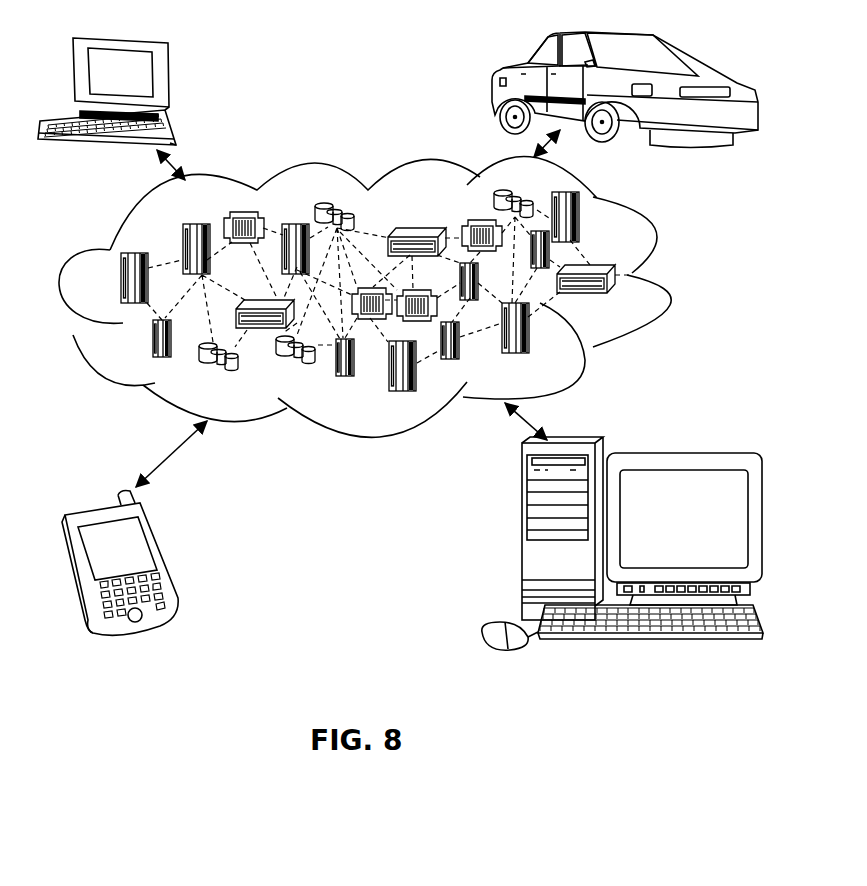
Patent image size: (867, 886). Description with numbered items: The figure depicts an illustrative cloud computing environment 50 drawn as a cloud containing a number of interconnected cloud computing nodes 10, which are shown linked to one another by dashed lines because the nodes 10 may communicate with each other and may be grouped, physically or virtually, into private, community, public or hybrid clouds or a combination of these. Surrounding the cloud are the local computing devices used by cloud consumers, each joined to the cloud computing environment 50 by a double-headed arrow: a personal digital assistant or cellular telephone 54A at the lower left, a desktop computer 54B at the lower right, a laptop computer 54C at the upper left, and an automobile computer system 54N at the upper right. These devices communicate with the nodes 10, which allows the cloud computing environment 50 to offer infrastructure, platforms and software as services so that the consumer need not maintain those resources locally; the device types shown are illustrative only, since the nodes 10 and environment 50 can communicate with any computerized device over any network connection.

The cloud computing node 10 is at (641, 295).
The cloud computing environment 50 is at (653, 247).
The personal digital assistant or cellular telephone 54A is at (162, 558).
The desktop computer 54B is at (522, 537).
The laptop computer 54C is at (172, 79).
The automobile computer system 54N is at (490, 80).